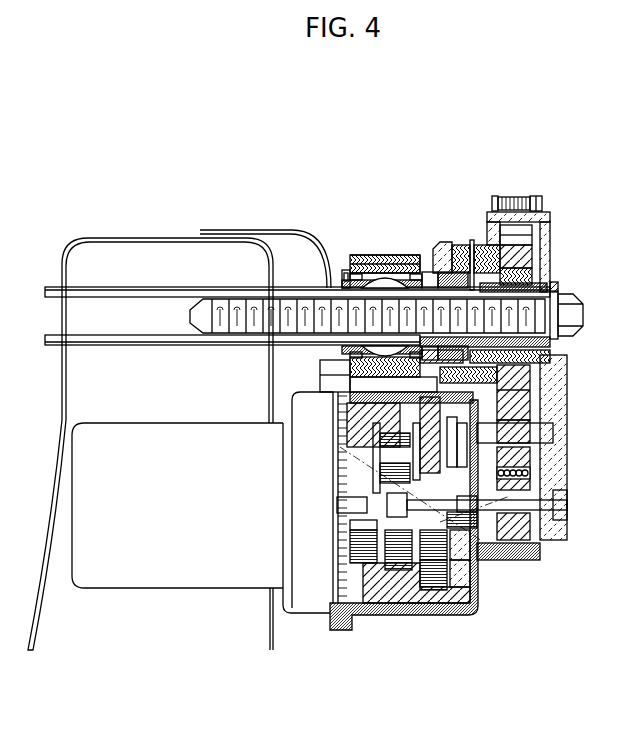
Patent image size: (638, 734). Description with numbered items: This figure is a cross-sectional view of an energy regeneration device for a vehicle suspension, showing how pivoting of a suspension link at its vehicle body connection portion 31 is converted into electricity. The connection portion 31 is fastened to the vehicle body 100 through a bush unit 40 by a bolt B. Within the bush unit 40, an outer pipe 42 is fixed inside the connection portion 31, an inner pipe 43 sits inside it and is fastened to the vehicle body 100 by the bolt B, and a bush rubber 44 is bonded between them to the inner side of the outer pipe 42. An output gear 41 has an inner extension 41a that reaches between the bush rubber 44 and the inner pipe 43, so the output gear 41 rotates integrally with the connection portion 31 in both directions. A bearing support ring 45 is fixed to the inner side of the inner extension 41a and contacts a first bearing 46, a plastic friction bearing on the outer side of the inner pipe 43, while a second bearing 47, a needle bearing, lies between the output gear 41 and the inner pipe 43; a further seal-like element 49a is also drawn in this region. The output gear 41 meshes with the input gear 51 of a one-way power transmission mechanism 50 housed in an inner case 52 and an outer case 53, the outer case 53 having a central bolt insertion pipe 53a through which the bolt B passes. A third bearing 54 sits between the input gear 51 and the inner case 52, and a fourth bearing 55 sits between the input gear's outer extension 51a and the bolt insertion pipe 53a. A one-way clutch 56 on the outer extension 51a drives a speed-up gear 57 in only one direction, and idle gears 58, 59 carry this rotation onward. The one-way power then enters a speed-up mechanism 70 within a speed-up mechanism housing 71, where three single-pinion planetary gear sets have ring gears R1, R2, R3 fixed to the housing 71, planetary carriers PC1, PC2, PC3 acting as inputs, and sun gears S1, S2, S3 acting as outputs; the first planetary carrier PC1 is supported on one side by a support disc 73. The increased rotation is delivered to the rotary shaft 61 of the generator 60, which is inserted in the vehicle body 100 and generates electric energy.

The vehicle body 100 is at (117, 238).
The vehicle body connection portion 31 is at (394, 256).
The bush unit 40 is at (386, 243).
The output gear 41 is at (455, 245).
The inner extension 41a is at (366, 256).
The outer pipe 42 is at (370, 255).
The inner pipe 43 is at (312, 276).
The bush rubber 44 is at (410, 255).
The bearing support ring 45 is at (418, 256).
The first bearing 46 is at (346, 272).
The second bearing 47 is at (440, 252).
The seal ring 49a is at (335, 273).
The one-way power transmission mechanism 50 is at (561, 233).
The input gear 51 is at (478, 245).
The outer extension 51a is at (560, 288).
The inner case 52 is at (466, 240).
The outer case 53 is at (543, 226).
The bolt insertion pipe 53a is at (530, 345).
The third bearing 54 is at (487, 245).
The fourth bearing 55 is at (530, 360).
The one-way clutch 56 is at (522, 385).
The speed-up gear 57 is at (523, 231).
The idle gear 58 is at (465, 437).
The idle gear 59 is at (533, 527).
The generator 60 is at (180, 596).
The rotary shaft 61 is at (353, 503).
The speed-up mechanism 70 is at (437, 628).
The speed-up mechanism housing 71 is at (457, 610).
The support disc 73 is at (540, 470).
The bolt B is at (582, 320).
The sun gear S1 is at (463, 522).
The sun gear S2 is at (383, 477).
The sun gear S3 is at (363, 527).
The first planetary carrier PC1 is at (440, 560).
The planetary carrier PC2 is at (440, 578).
The planetary carrier PC3 is at (380, 540).
The ring gear R1 is at (433, 586).
The ring gear R2 is at (403, 576).
The ring gear R3 is at (361, 562).